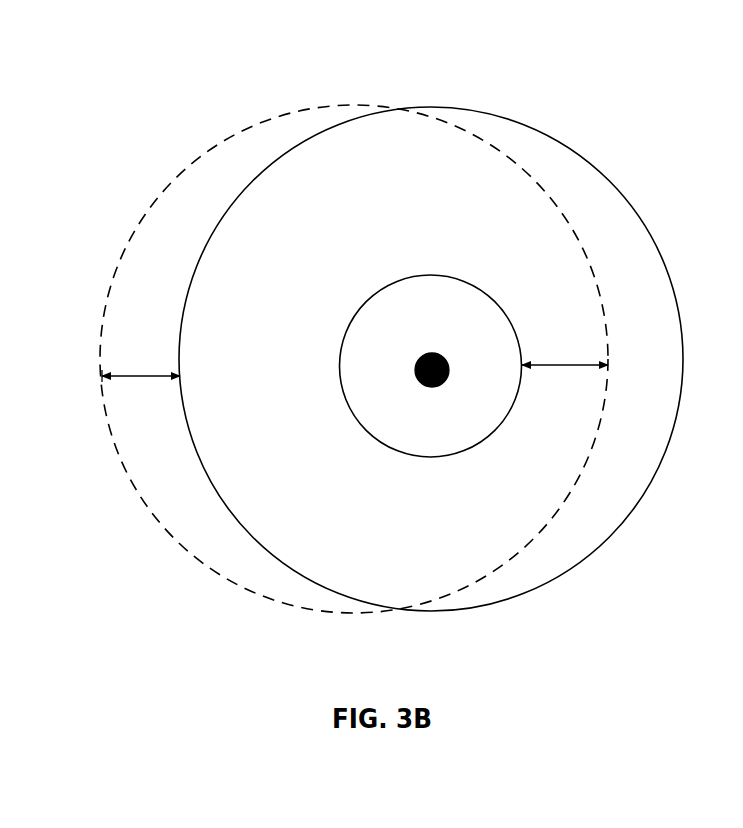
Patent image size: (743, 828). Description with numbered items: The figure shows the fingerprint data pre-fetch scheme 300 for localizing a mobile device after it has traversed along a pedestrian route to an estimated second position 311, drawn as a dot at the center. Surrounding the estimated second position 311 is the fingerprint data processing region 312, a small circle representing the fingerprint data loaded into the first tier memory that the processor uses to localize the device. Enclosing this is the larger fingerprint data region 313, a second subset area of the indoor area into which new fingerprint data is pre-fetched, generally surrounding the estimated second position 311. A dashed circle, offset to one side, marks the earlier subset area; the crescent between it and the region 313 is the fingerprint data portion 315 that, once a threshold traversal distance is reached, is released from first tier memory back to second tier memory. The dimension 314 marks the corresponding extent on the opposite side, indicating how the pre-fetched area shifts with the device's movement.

The fingerprint data pre-fetch scheme 300 is at (641, 28).
The estimated second position 311 is at (447, 372).
The fingerprint data processing region 312 is at (454, 318).
The fingerprint data region 313 is at (649, 478).
The radial distance to offset boundary (right) 314 is at (565, 365).
The fingerprint data portion 315 is at (132, 376).